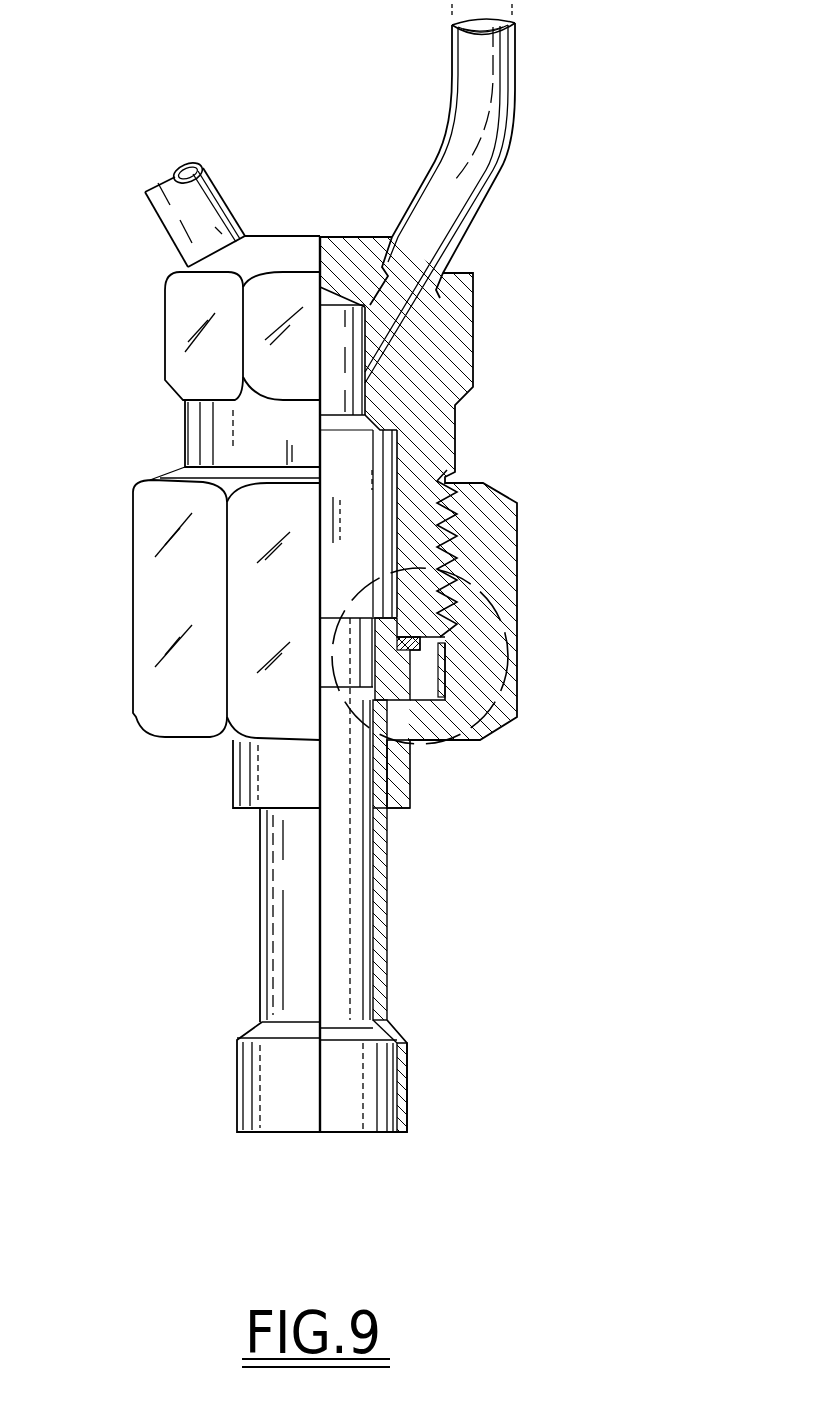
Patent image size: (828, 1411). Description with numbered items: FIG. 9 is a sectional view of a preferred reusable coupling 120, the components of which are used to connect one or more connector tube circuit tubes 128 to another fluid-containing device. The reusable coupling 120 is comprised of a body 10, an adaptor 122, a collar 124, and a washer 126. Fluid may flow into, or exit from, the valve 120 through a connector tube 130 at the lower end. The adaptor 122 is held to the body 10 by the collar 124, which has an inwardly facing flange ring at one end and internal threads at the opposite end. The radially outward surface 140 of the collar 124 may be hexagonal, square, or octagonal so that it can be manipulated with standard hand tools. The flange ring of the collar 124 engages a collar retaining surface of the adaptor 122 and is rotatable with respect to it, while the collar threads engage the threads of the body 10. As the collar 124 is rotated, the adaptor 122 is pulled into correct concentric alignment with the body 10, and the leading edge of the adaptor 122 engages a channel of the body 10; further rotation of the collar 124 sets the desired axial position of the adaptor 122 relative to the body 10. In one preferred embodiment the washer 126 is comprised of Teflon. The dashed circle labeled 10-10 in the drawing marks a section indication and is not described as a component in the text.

The reusable coupling 120 is at (637, 140).
The connector tube circuit tube 128 is at (514, 94).
The body 10 is at (500, 328).
The collar 124 is at (157, 583).
The radially outward surface 140 is at (133, 648).
The washer 126 is at (444, 641).
The adaptor 122 is at (412, 806).
The connector tube 130 is at (278, 932).
The section indicator 10-10 is at (445, 758).